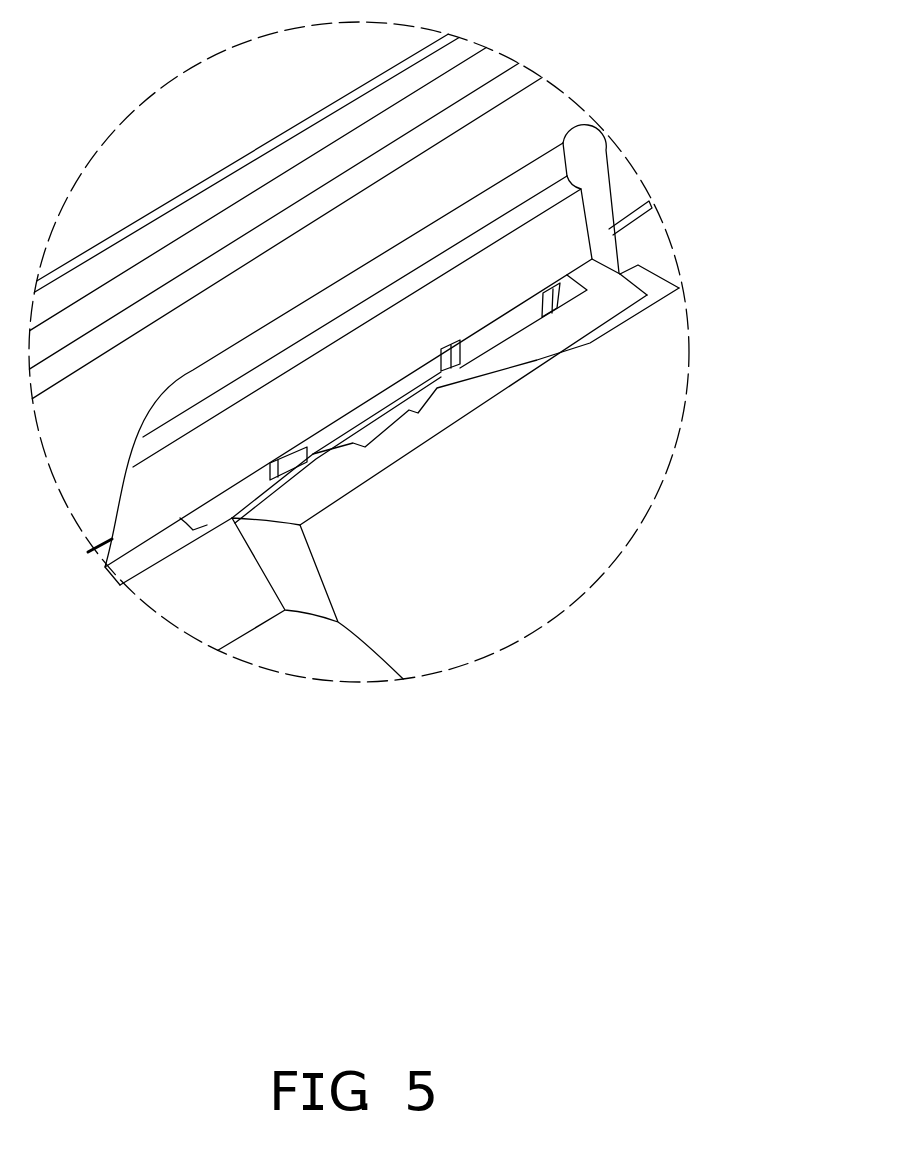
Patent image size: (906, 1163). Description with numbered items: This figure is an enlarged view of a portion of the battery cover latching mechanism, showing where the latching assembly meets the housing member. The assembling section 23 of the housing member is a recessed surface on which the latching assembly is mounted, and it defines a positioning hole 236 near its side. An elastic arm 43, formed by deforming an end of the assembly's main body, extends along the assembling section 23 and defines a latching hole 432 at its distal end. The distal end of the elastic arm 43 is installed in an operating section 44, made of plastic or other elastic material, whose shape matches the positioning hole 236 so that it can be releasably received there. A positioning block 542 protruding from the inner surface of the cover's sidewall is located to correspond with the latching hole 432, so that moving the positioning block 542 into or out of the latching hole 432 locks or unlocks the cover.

The assembling section 23 is at (452, 398).
The elastic arm 43 is at (520, 315).
The operating section 44 is at (562, 232).
The positioning hole 236 is at (583, 157).
The latching hole 432 is at (214, 510).
The positioning block 542 is at (320, 440).